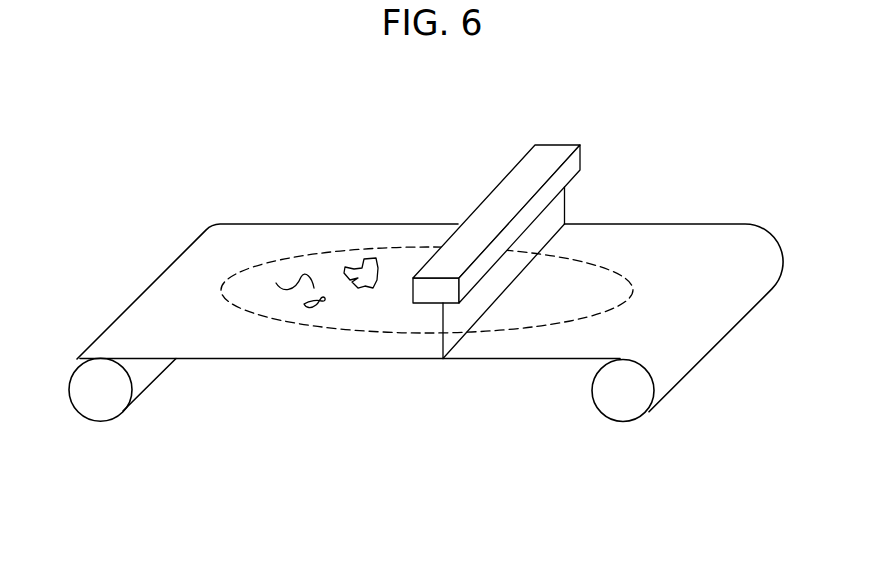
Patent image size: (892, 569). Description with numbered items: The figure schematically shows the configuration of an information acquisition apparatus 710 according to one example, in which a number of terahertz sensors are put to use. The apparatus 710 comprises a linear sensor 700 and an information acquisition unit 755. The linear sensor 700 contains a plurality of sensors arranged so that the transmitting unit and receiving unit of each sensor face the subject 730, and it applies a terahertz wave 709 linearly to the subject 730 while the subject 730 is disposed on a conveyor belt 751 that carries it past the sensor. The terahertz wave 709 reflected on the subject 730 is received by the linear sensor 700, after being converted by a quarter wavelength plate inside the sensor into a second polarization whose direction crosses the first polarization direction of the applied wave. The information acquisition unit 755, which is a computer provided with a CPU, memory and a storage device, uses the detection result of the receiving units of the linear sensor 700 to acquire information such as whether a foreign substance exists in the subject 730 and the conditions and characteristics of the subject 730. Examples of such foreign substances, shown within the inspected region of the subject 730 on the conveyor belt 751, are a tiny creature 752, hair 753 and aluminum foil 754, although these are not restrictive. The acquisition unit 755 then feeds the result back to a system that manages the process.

The linear sensor 700 is at (499, 194).
The terahertz wave 709 is at (447, 335).
The information acquisition apparatus 710 is at (546, 255).
The subject 730 is at (582, 285).
The conveyor belt 751 is at (157, 307).
The tiny creature 752 is at (312, 312).
The hair 753 is at (302, 275).
The aluminum foil 754 is at (372, 263).
The information acquisition unit 755 is at (508, 190).